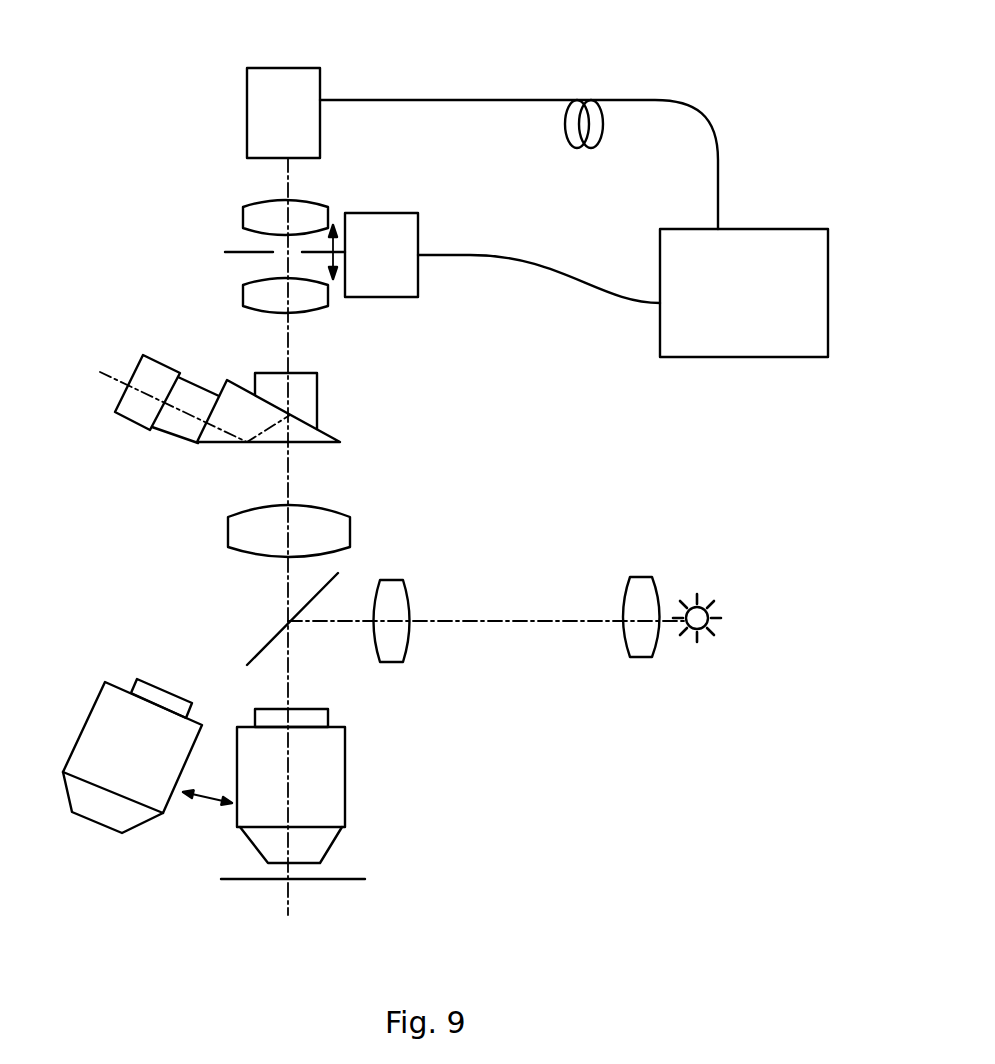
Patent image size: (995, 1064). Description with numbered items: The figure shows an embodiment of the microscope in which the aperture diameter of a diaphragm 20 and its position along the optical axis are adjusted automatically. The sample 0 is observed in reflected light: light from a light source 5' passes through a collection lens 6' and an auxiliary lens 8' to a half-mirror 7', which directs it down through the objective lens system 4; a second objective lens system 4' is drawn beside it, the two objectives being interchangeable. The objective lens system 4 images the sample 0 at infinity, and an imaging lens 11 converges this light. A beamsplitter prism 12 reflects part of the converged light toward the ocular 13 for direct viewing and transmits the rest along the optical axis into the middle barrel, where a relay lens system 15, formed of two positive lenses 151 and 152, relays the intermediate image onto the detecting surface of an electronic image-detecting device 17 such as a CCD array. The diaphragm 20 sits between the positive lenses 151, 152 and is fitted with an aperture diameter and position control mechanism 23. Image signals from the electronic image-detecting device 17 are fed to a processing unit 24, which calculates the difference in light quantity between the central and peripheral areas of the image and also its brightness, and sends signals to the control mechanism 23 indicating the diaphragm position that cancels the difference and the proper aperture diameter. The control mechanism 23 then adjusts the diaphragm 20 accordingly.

The electronic image-detecting device 17 is at (280, 90).
The aperture diameter and position control mechanism 23 is at (400, 220).
The processing unit 24 is at (815, 298).
The relay lens system 15 is at (201, 262).
The positive lens 152 is at (243, 218).
The positive lens 151 is at (230, 302).
The diaphragm 20 is at (242, 254).
The ocular 13 is at (136, 425).
The beamsplitter prism 12 is at (225, 443).
The imaging lens 11 is at (335, 525).
The half-mirror 7' is at (281, 619).
The auxiliary lens 8' is at (393, 590).
The collection lens 6' is at (641, 583).
The light source 5' is at (697, 582).
The objective lens system 4 is at (329, 786).
The objective lens system 4' is at (130, 756).
The sample 0 is at (291, 880).